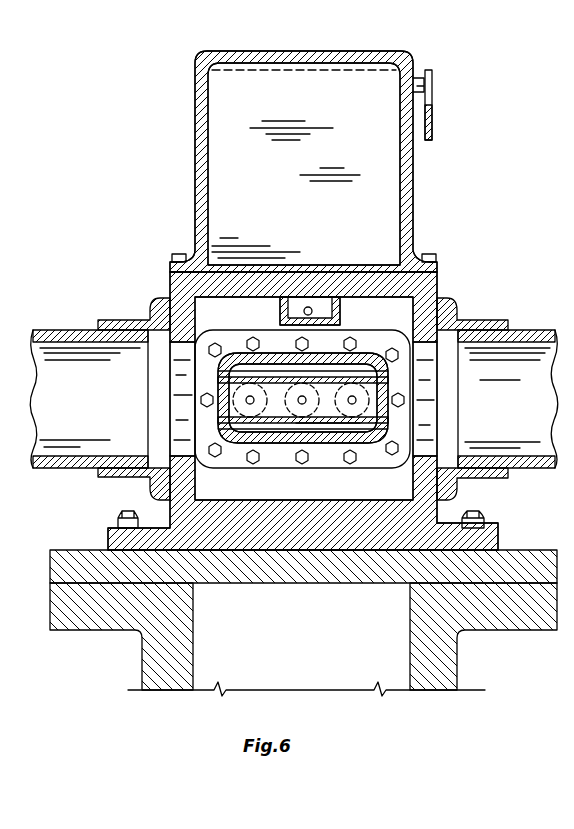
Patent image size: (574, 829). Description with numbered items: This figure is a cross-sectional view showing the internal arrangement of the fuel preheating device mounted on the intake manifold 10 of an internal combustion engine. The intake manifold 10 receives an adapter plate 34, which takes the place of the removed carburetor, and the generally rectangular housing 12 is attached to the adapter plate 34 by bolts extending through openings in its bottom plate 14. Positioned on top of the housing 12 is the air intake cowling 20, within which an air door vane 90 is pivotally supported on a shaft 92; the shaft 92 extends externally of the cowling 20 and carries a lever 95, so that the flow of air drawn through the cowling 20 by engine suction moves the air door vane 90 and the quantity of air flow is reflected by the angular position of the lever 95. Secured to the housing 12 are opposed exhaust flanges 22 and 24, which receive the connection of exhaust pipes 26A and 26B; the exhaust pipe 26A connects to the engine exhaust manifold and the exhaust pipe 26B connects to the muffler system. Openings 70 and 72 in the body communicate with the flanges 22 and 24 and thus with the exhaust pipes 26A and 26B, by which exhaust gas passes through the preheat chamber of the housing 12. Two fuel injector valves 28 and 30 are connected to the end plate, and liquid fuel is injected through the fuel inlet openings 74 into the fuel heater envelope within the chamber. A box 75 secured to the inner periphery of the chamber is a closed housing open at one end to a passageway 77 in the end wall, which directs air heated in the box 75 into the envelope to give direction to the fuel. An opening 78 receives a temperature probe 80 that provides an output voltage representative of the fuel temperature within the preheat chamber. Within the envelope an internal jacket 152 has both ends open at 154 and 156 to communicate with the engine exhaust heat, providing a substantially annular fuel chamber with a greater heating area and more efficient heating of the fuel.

The intake manifold 10 is at (66, 600).
The housing 12 is at (432, 290).
The bottom plate 14 is at (110, 534).
The air intake cowling 20 is at (330, 52).
The exhaust flange 22 is at (138, 322).
The exhaust flange 24 is at (466, 320).
The exhaust pipe 26A is at (66, 330).
The exhaust pipe 26B is at (538, 332).
The fuel injector valve 28 is at (235, 412).
The fuel injector valve 30 is at (372, 400).
The adapter plate 34 is at (60, 572).
The opening 70 is at (438, 470).
The opening 72 is at (184, 458).
The fuel inlet opening 74 is at (262, 392).
The box 75 is at (320, 300).
The passageway 77 is at (308, 307).
The opening 78 is at (294, 404).
The temperature probe 80 is at (254, 408).
The air door vane 90 is at (250, 181).
The shaft 92 is at (418, 78).
The lever 95 is at (432, 128).
The internal jacket 152 is at (314, 418).
The open end 154 is at (262, 384).
The open end 156 is at (384, 416).